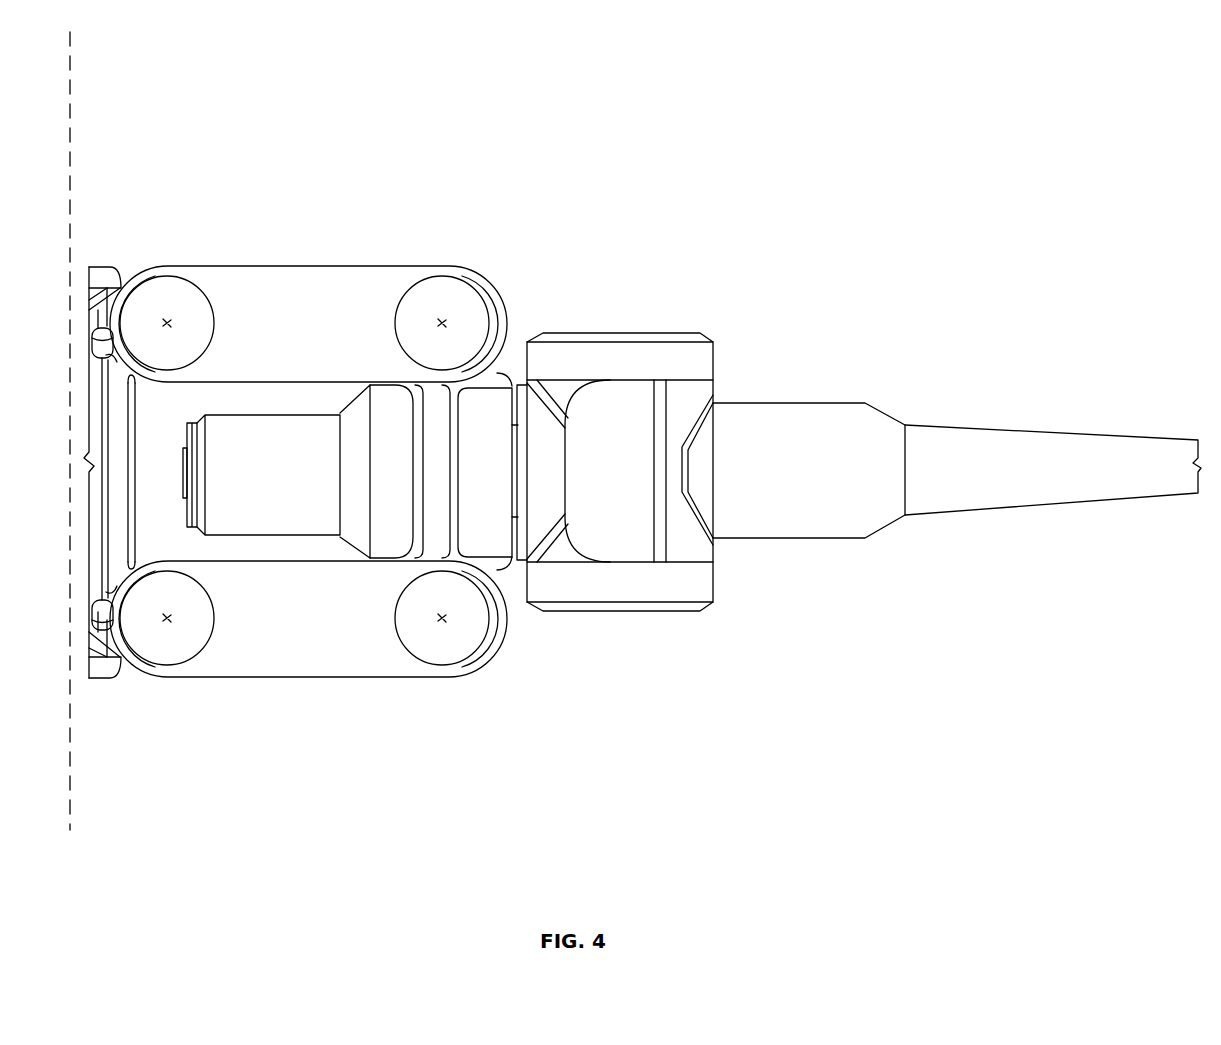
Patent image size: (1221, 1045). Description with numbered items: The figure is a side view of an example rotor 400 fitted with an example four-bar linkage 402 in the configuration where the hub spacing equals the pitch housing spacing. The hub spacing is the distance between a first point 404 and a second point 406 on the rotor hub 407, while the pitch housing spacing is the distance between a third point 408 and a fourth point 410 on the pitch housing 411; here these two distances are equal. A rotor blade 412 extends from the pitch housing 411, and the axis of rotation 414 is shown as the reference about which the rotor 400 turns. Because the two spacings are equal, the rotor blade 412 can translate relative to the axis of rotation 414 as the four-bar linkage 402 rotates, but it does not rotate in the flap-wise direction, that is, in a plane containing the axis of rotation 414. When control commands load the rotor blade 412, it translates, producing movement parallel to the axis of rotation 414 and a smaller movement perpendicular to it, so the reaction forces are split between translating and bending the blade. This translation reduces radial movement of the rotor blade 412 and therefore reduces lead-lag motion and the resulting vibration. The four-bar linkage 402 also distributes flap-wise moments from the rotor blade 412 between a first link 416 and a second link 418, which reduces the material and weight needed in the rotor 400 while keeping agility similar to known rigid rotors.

The rotor 400 is at (519, 129).
The four-bar linkage 402 is at (320, 222).
The first point 404 is at (167, 320).
The second point 406 is at (167, 620).
The rotor hub 407 is at (97, 680).
The third point 408 is at (442, 322).
The fourth point 410 is at (442, 620).
The pitch housing 411 is at (707, 341).
The rotor blade 412 is at (955, 420).
The axis of rotation 414 is at (72, 148).
The first link 416 is at (372, 272).
The second link 418 is at (275, 672).